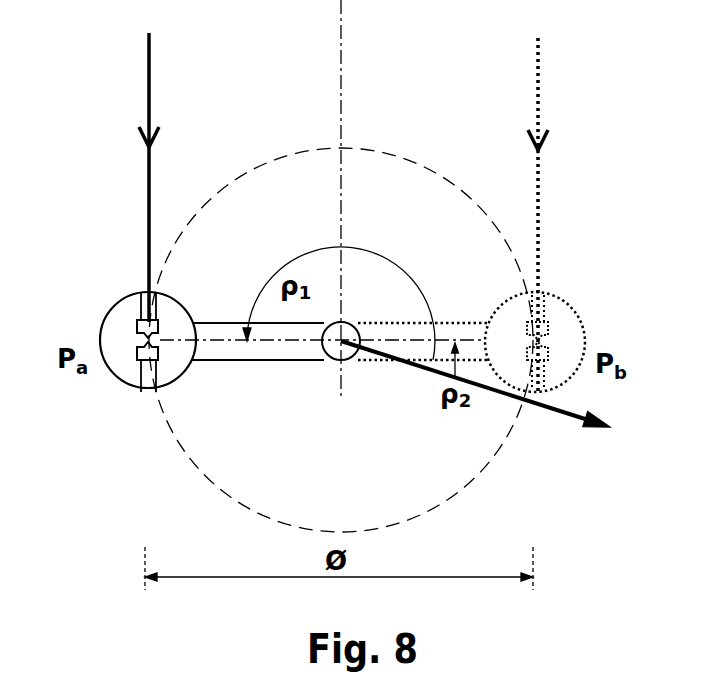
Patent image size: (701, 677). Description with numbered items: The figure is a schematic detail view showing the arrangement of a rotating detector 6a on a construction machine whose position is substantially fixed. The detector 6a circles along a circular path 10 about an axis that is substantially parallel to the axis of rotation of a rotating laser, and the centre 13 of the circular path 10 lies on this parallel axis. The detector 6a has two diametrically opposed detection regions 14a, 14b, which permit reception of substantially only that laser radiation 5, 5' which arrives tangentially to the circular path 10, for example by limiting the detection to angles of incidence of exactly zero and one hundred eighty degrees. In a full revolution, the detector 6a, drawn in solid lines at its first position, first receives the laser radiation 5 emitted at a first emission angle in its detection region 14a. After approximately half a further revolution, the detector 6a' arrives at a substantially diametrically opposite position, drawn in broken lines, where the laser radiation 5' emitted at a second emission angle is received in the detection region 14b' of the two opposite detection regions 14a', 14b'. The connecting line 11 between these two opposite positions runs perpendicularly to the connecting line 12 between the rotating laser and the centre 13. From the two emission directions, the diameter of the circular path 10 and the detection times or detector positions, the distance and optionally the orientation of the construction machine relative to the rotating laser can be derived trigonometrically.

The laser radiation 5 is at (121, 177).
The laser radiation 5' is at (570, 215).
The detector 6a is at (105, 342).
The detector 6a' is at (578, 342).
The circular path 10 is at (270, 163).
The connecting line 11 is at (268, 342).
The connecting line 12 is at (350, 110).
The centre of the circular path 13 is at (337, 348).
The detection region 14a is at (102, 290).
The detection region 14a' is at (581, 420).
The detection region 14b is at (102, 390).
The detection region 14b' is at (587, 292).